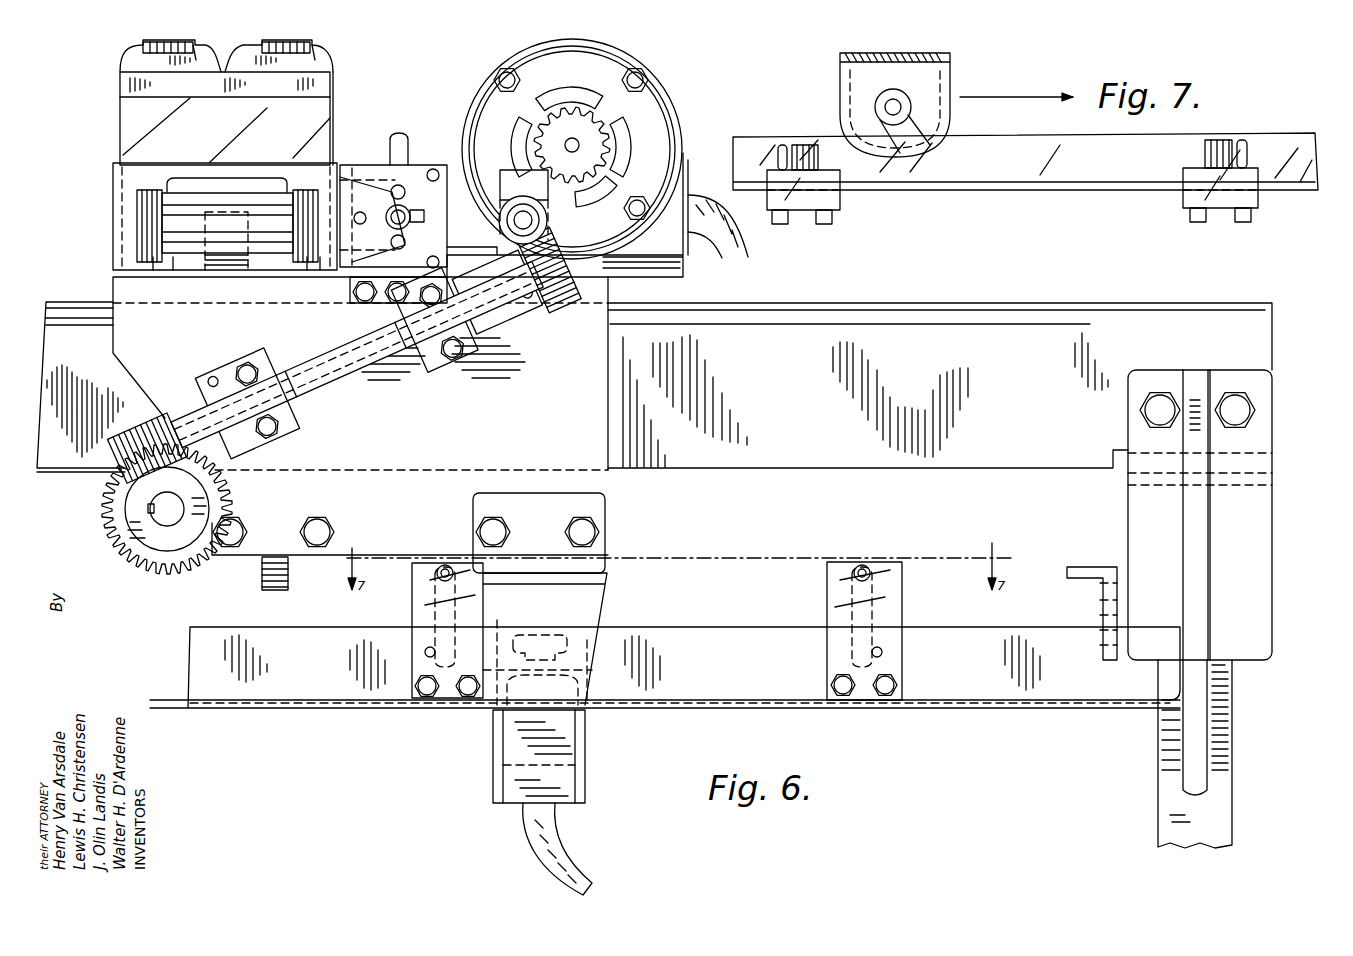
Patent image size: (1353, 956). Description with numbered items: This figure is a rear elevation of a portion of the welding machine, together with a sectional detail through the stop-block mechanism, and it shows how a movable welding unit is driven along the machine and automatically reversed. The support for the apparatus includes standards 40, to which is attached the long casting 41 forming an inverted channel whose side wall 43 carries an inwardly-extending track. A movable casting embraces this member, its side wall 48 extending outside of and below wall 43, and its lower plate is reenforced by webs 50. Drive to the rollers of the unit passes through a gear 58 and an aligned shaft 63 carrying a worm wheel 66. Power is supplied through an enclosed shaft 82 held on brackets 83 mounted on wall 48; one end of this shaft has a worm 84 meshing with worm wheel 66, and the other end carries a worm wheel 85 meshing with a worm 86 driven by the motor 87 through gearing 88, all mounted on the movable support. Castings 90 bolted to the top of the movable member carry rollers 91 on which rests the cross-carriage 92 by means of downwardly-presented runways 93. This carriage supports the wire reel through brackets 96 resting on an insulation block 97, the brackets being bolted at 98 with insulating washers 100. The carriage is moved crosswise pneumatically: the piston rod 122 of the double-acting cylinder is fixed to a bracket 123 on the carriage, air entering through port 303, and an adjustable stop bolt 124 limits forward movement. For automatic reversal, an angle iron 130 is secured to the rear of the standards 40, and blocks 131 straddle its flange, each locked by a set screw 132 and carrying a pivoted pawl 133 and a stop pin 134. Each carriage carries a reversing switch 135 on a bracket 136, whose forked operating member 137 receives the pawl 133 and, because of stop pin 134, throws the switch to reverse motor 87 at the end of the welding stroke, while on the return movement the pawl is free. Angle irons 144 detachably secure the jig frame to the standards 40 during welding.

In FIG. 6, the standard 40 is at (1168, 747).
In FIG. 6, the casting 41 is at (65, 322).
In FIG. 6, the side wall 43 is at (1092, 427).
In FIG. 6, the side wall 48 is at (360, 416).
In FIG. 6, the web 50 is at (262, 574).
In FIG. 6, the gear 58 is at (169, 518).
In FIG. 6, the shaft 63 is at (170, 522).
In FIG. 6, the worm wheel 66 is at (145, 520).
In FIG. 6, the enclosed shaft 82 is at (350, 340).
In FIG. 6, the bracket 83 is at (347, 380).
In FIG. 6, the worm 84 is at (112, 460).
In FIG. 6, the worm wheel 85 is at (559, 297).
In FIG. 6, the worm 86 is at (516, 224).
In FIG. 6, the motor 87 is at (633, 110).
In FIG. 6, the gearing 88 is at (543, 146).
In FIG. 6, the casting 90 is at (227, 231).
In FIG. 6, the roller 91 is at (150, 214).
In FIG. 6, the carriage 92 is at (323, 102).
In FIG. 6, the runway 93 is at (153, 187).
In FIG. 6, the bracket 96 is at (130, 52).
In FIG. 6, the insulation block 97 is at (130, 82).
In FIG. 6, the bolt 98 is at (262, 45).
In FIG. 6, the washer 100 is at (168, 53).
In FIG. 6, the piston rod 122 is at (397, 222).
In FIG. 6, the bracket 123 is at (350, 163).
In FIG. 6, the adjustable stop bolt 124 is at (323, 272).
In FIG. 6, the angle iron 130 is at (982, 690).
In FIG. 7, the angle iron 130 is at (1150, 173).
In FIG. 6, the block 131 is at (423, 638).
In FIG. 7, the block 131 is at (842, 203).
In FIG. 6, the set screw 132 is at (468, 697).
In FIG. 7, the set screw 132 is at (780, 224).
In FIG. 6, the pivoted pawl 133 is at (413, 610).
In FIG. 7, the pivoted pawl 133 is at (830, 130).
In FIG. 6, the stop pin 134 is at (427, 657).
In FIG. 7, the stop pin 134 is at (780, 155).
In FIG. 6, the reversing switch 135 is at (583, 735).
In FIG. 6, the bracket 136 is at (590, 610).
In FIG. 7, the bracket 136 is at (933, 48).
In FIG. 6, the forked operating member 137 is at (548, 618).
In FIG. 7, the forked operating member 137 is at (907, 120).
In FIG. 6, the angle iron 144 is at (1077, 570).
In FIG. 6, the port 303 is at (402, 143).